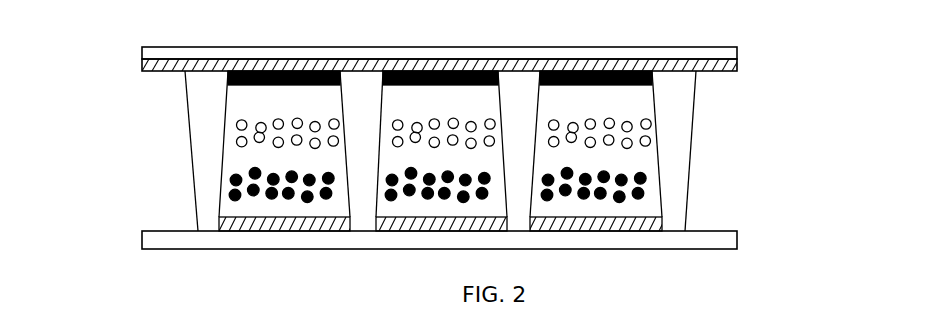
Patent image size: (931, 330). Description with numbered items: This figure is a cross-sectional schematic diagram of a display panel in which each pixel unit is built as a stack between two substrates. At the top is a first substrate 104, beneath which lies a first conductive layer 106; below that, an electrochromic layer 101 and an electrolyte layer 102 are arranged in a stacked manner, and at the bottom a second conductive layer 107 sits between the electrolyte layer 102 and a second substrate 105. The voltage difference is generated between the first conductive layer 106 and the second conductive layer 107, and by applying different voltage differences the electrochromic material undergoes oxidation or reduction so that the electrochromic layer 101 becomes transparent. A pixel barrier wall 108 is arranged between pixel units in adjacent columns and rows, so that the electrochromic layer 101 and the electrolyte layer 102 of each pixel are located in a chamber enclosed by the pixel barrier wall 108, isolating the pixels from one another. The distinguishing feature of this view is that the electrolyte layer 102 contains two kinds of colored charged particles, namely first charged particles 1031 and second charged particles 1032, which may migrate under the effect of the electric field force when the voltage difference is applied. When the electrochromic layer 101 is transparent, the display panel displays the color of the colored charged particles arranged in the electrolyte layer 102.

The first substrate 104 is at (727, 50).
The first conductive layer 106 is at (142, 64).
The electrochromic layer 101 is at (652, 80).
The electrolyte layer 102 is at (262, 106).
The second charged particles 1032 is at (240, 140).
The first charged particles 1031 is at (232, 181).
The second conductive layer 107 is at (219, 221).
The second substrate 105 is at (708, 238).
The pixel barrier wall 108 is at (677, 156).